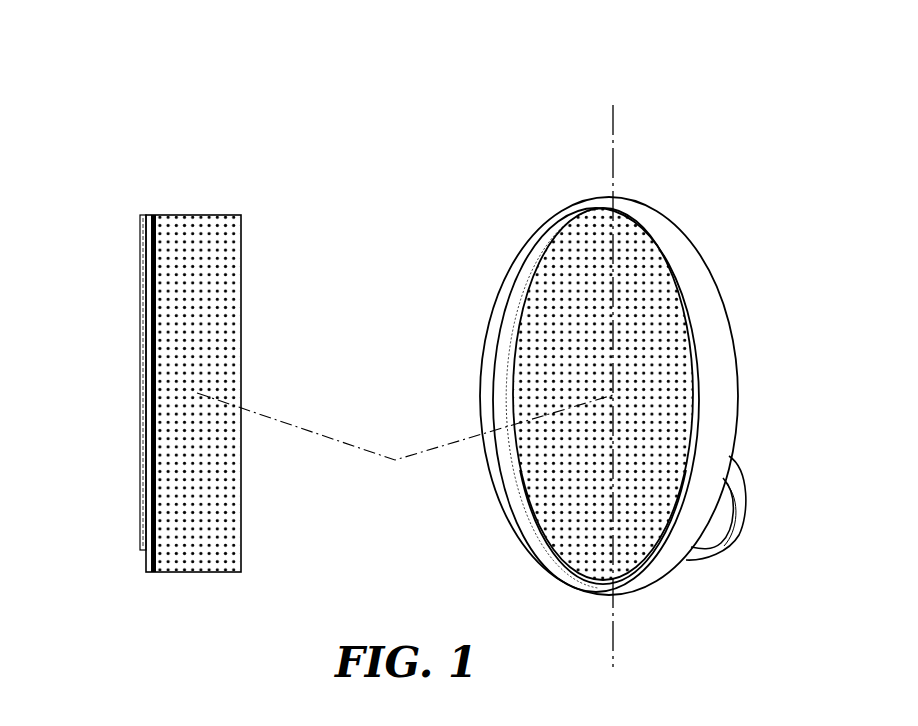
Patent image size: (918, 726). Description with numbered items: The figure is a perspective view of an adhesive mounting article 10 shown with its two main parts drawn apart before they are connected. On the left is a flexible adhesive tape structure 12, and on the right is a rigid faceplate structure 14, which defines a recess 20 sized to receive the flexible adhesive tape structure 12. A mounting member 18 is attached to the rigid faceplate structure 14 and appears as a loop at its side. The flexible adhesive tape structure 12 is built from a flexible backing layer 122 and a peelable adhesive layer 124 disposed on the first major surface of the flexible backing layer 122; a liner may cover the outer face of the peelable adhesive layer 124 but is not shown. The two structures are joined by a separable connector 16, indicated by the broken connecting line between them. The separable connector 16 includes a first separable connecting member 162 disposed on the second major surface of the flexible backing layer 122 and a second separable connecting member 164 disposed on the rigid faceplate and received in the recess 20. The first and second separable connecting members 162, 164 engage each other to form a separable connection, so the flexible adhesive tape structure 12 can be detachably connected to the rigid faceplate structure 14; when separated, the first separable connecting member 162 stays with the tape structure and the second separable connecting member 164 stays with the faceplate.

The adhesive mounting article 10 is at (515, 94).
The flexible adhesive tape structure 12 is at (194, 205).
The rigid faceplate structure 14 is at (703, 226).
The separable connector 16 is at (410, 455).
The mounting member 18 is at (735, 500).
The recess 20 is at (533, 278).
The flexible backing layer 122 is at (145, 566).
The peelable adhesive layer 124 is at (142, 494).
The first separable connecting member 162 is at (220, 508).
The second separable connecting member 164 is at (570, 524).